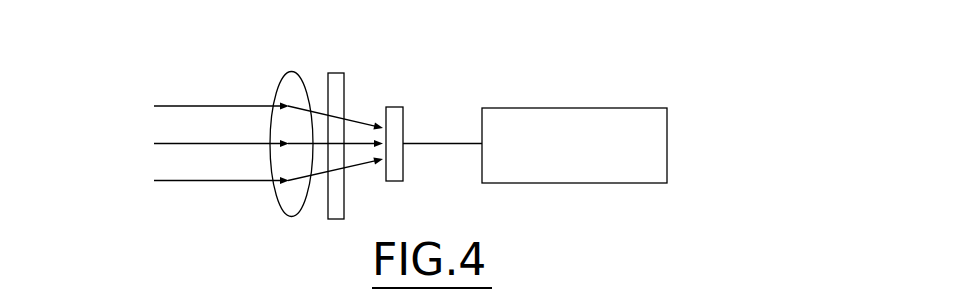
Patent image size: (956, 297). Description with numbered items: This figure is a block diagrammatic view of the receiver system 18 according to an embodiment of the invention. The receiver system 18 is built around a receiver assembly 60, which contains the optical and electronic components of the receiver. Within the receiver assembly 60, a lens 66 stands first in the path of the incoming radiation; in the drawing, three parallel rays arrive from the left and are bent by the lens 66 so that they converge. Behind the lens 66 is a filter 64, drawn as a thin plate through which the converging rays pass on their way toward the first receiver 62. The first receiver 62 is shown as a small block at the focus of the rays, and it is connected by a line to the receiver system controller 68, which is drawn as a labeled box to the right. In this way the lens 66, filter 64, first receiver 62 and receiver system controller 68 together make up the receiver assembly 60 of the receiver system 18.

The receiver system 18 is at (626, 36).
The receiver assembly 60 is at (472, 199).
The first receiver 62 is at (403, 113).
The filter 64 is at (345, 202).
The lens 66 is at (281, 80).
The receiver system controller 68 is at (597, 108).